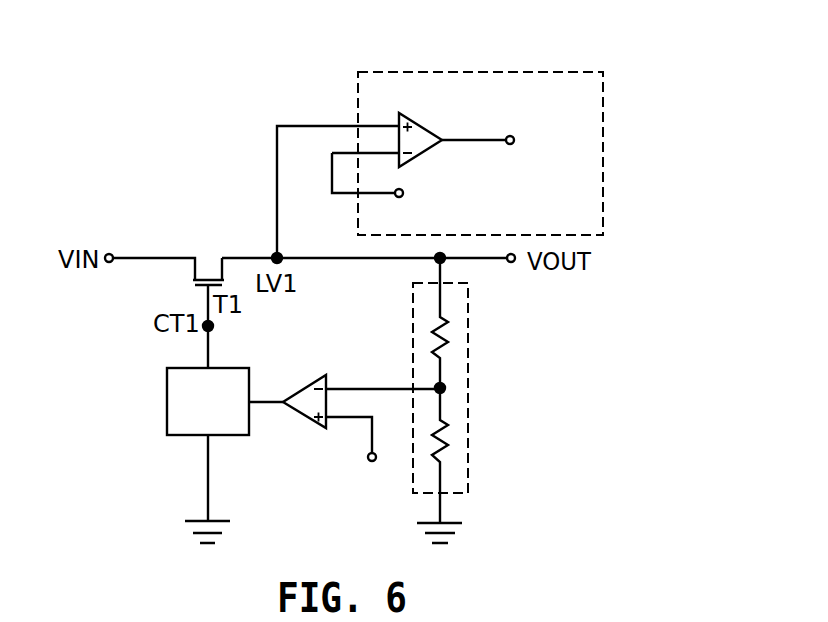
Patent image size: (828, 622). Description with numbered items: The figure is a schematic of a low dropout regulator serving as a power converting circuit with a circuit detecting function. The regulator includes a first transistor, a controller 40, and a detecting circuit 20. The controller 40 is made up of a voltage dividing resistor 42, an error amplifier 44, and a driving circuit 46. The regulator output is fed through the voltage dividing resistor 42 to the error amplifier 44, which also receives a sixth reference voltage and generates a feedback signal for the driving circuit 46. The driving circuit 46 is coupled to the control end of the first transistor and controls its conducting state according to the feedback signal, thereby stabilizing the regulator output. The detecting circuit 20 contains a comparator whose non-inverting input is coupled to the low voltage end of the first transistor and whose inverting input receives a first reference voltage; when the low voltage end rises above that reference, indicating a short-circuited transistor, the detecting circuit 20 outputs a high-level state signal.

The detecting circuit 20 is at (584, 72).
The controller 40 is at (577, 330).
The voltage dividing resistor 42 is at (468, 385).
The error amplifier 44 is at (313, 372).
The driving circuit 46 is at (231, 368).